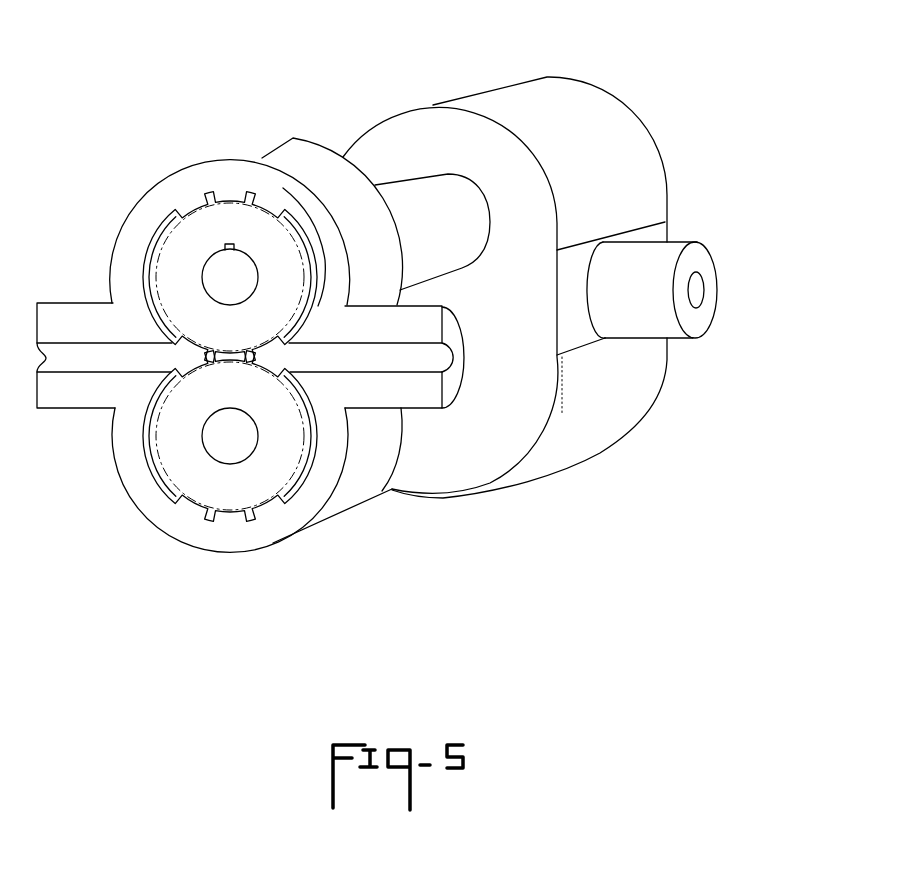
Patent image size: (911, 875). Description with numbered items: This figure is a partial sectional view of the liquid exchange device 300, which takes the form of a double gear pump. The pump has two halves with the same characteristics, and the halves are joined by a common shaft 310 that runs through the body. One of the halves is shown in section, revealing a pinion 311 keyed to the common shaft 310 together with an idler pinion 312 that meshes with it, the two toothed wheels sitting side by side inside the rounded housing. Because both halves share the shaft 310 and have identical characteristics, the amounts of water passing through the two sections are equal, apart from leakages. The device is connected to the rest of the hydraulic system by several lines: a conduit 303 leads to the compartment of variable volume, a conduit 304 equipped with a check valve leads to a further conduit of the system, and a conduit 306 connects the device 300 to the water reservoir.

The liquid exchange device 300 is at (583, 107).
The conduit 303 is at (80, 358).
The conduit 304 is at (698, 315).
The conduit 306 is at (458, 387).
The common shaft 310 is at (467, 237).
The pinion 311 is at (180, 253).
The idler pinion 312 is at (183, 467).